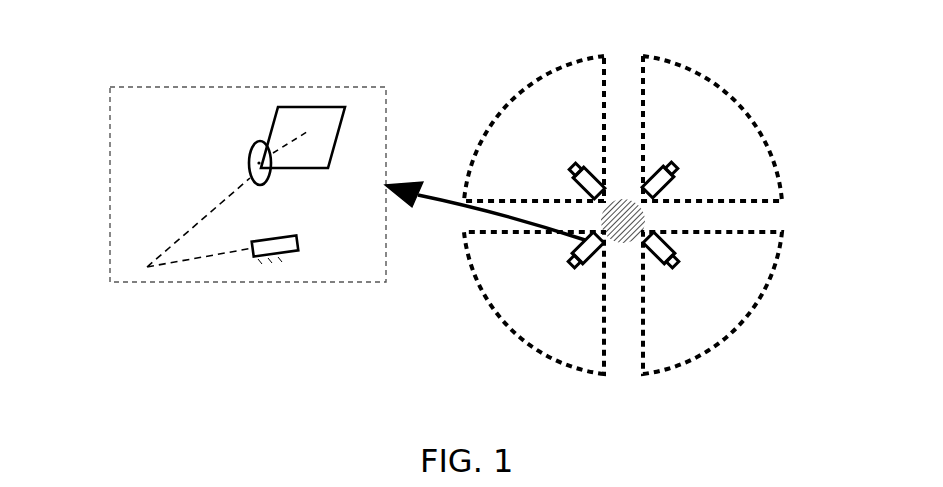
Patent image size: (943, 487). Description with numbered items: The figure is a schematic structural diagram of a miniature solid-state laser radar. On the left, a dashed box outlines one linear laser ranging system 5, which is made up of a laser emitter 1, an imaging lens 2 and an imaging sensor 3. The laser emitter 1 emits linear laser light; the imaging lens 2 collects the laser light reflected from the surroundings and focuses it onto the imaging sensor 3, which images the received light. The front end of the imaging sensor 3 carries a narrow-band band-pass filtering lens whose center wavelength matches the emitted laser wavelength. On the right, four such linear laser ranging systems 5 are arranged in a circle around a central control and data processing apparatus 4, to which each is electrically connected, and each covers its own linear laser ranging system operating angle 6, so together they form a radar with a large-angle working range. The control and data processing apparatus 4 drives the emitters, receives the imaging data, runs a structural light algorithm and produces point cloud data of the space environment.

The laser emitter 1 is at (270, 261).
The imaging lens 2 is at (248, 160).
The imaging sensor 3 is at (288, 170).
The control and data processing apparatus 4 is at (643, 215).
The linear laser ranging system 5 is at (108, 186).
The linear laser ranging system operating angle 6 is at (738, 90).